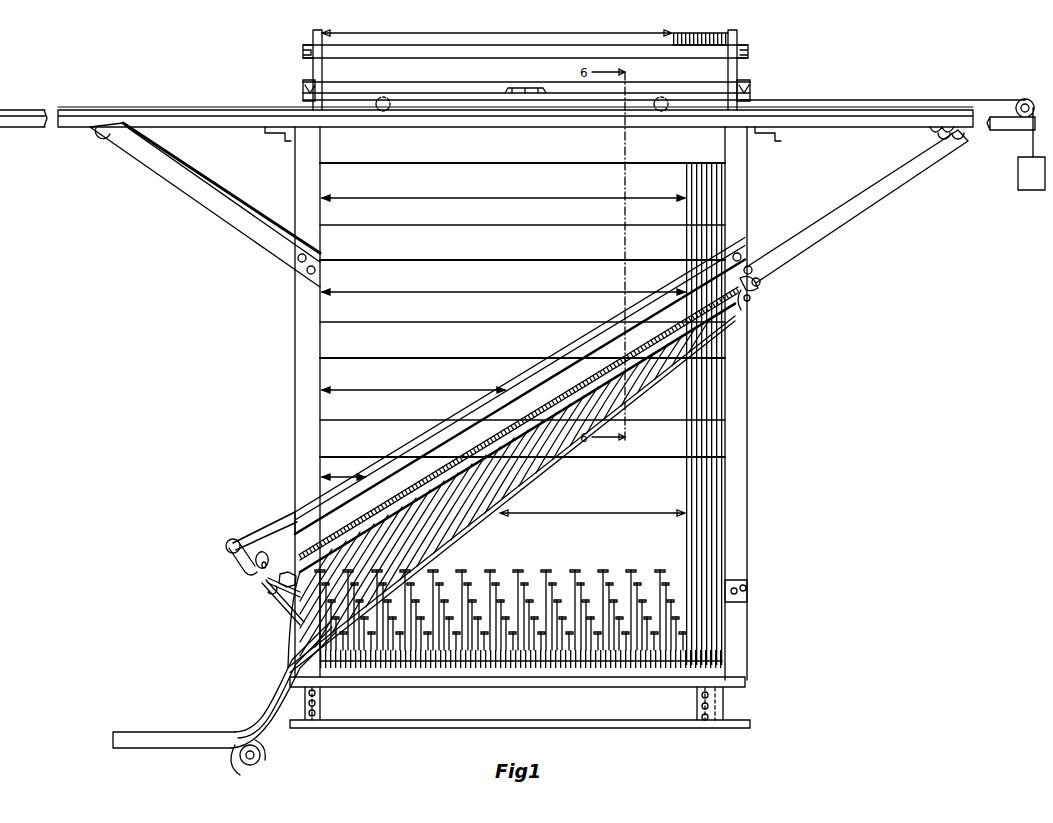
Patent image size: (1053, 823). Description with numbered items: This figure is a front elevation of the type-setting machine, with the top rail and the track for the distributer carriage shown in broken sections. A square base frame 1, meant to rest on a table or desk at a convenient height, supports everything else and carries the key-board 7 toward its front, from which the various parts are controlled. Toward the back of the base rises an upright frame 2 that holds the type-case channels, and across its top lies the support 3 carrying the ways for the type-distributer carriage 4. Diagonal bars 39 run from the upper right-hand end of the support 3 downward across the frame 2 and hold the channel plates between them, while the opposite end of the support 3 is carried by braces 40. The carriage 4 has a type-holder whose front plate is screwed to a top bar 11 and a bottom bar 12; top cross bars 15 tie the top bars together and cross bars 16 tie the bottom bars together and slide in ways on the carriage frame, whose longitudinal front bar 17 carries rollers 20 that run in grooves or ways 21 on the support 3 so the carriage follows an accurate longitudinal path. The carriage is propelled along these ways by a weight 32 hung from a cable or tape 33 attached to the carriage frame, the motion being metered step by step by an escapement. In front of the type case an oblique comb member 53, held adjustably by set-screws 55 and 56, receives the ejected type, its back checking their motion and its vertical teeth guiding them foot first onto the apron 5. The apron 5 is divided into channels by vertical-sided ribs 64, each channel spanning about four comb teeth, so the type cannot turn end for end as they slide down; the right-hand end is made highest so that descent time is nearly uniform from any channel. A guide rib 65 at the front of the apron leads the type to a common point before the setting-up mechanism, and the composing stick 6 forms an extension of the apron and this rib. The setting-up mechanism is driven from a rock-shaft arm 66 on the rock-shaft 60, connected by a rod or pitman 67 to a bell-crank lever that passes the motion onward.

The base frame 1 is at (405, 710).
The upright frame 2 is at (300, 350).
The support 3 is at (890, 117).
The type-distributer carriage 4 is at (527, 65).
The apron 5 is at (715, 345).
The composing stick 6 is at (180, 735).
The key-board 7 is at (655, 565).
The top bar 11 is at (402, 50).
The bottom bar 12 is at (443, 86).
The top cross bars 15 is at (303, 51).
The cross bars 16 is at (303, 90).
The front bar 17 is at (515, 100).
The rollers 20 is at (385, 111).
The grooves or ways 21 is at (860, 108).
The weight 32 is at (1025, 190).
The cable or tape 33 is at (950, 100).
The diagonal bars 39 is at (900, 175).
The braces 40 is at (180, 185).
The comb member 53 is at (590, 378).
The set-screw 55 is at (262, 580).
The set-screw 56 is at (760, 282).
The rock-shaft 60 is at (285, 527).
The ribs 64 is at (550, 452).
The guide rib 65 is at (592, 499).
The rock-shaft arm 66 is at (250, 568).
The rod or pitman 67 is at (272, 605).